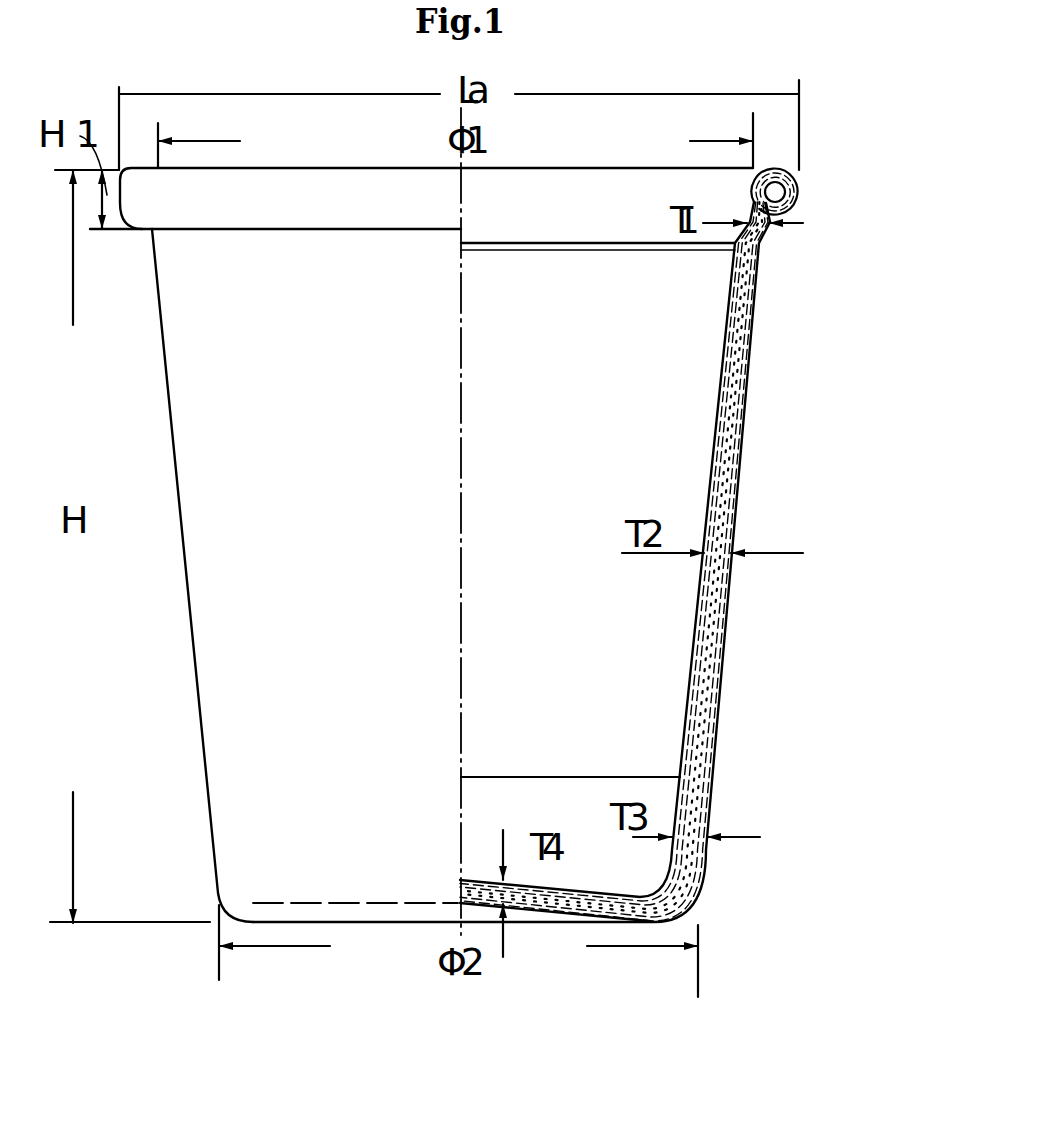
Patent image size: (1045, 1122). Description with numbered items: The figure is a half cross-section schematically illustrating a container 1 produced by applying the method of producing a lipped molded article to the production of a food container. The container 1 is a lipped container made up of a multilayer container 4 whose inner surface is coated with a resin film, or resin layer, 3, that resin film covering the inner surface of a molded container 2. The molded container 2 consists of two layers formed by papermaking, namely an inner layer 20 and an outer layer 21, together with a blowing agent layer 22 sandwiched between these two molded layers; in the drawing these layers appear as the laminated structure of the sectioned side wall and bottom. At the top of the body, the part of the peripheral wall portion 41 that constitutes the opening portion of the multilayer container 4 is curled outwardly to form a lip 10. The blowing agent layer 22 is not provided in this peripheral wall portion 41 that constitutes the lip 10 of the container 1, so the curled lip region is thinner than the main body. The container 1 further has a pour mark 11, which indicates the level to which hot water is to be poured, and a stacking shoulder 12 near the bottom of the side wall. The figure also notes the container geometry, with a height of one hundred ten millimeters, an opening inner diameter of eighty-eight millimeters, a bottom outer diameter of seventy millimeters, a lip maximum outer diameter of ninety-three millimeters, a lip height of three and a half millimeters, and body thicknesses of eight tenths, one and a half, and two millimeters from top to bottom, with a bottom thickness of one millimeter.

The container 1 is at (513, 533).
The lip 10 is at (800, 201).
The peripheral wall portion 41 is at (791, 212).
The pour mark 11 is at (758, 268).
The multilayer container 4 is at (760, 370).
The resin film (resin layer) 3 is at (712, 400).
The molded container 2 is at (683, 557).
The inner layer 20 is at (706, 466).
The blowing agent layer 22 is at (728, 523).
The outer layer 21 is at (862, 450).
The stacking shoulder 12 is at (682, 755).